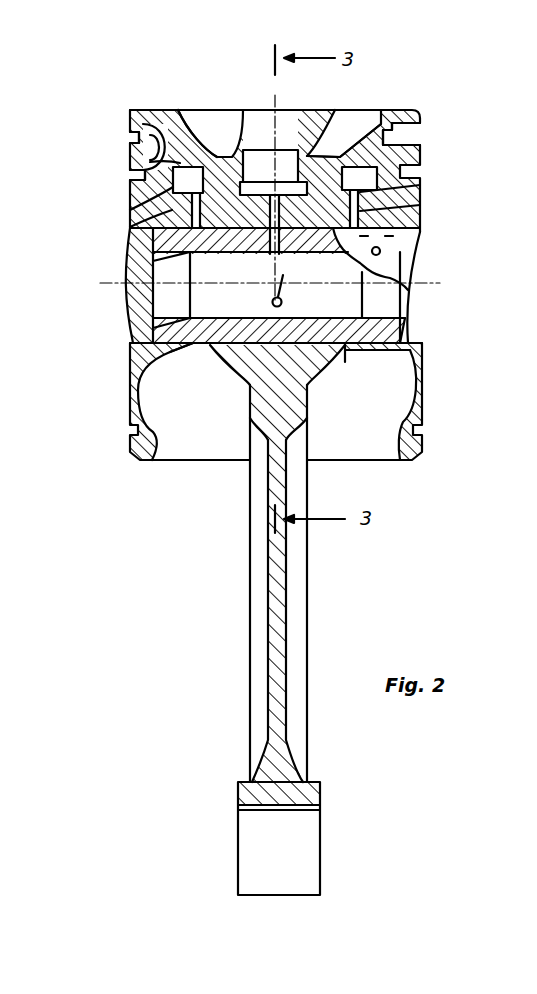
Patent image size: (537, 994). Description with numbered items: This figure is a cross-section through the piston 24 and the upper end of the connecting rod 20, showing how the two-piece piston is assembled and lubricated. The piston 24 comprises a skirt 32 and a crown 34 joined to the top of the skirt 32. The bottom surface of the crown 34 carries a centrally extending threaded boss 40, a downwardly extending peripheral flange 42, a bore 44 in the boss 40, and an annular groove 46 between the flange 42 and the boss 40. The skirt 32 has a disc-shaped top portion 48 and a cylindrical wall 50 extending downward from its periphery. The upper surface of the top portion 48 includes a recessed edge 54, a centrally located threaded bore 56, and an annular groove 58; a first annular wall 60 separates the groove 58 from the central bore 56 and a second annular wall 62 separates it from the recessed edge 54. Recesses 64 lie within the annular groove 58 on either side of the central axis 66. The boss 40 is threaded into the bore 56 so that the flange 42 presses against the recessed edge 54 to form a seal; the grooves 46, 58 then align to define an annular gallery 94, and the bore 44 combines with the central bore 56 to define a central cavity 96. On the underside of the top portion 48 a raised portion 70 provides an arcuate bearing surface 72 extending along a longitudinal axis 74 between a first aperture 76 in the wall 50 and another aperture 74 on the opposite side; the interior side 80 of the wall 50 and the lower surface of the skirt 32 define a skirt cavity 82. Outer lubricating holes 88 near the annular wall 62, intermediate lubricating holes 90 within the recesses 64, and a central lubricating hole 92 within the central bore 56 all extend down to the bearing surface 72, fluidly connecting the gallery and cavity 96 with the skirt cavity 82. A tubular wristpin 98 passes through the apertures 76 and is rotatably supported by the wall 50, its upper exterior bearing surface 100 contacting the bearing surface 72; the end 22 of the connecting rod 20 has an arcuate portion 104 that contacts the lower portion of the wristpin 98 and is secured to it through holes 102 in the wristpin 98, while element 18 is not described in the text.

The connecting rod big end 18 is at (297, 838).
The connecting rod 20 is at (287, 605).
The end of the connecting rod 22 is at (285, 392).
The piston 24 is at (466, 149).
The skirt 32 is at (425, 229).
The crown 34 is at (372, 108).
The threaded boss 40 is at (305, 172).
The flange 42 is at (178, 156).
The bore 44 is at (285, 150).
The annular groove 46 is at (178, 112).
The top portion 48 is at (405, 217).
The cylindrical wall 50 is at (425, 380).
The recessed edge 54 is at (418, 143).
The central bore 56 is at (205, 285).
The annular groove 58 is at (180, 161).
The first annular wall 60 is at (236, 118).
The second annular wall 62 is at (135, 117).
The recess 64 is at (172, 188).
The central axis 66 is at (282, 303).
The raised portion 70 is at (198, 208).
The arcuate bearing surface 72 is at (175, 247).
The longitudinal axis 74 is at (431, 285).
The aperture 76 is at (410, 338).
The interior side of the wall 80 is at (407, 400).
The skirt cavity 82 is at (220, 427).
The outer lubricating hole 88 is at (381, 251).
The intermediate lubricating hole 90 is at (186, 212).
The central lubricating hole 92 is at (279, 300).
The annular gallery 94 is at (345, 142).
The central cavity 96 is at (259, 168).
The wristpin 98 is at (193, 343).
The bearing surface 100 is at (354, 273).
The holes 102 is at (265, 345).
The arcuate portion 104 is at (320, 350).